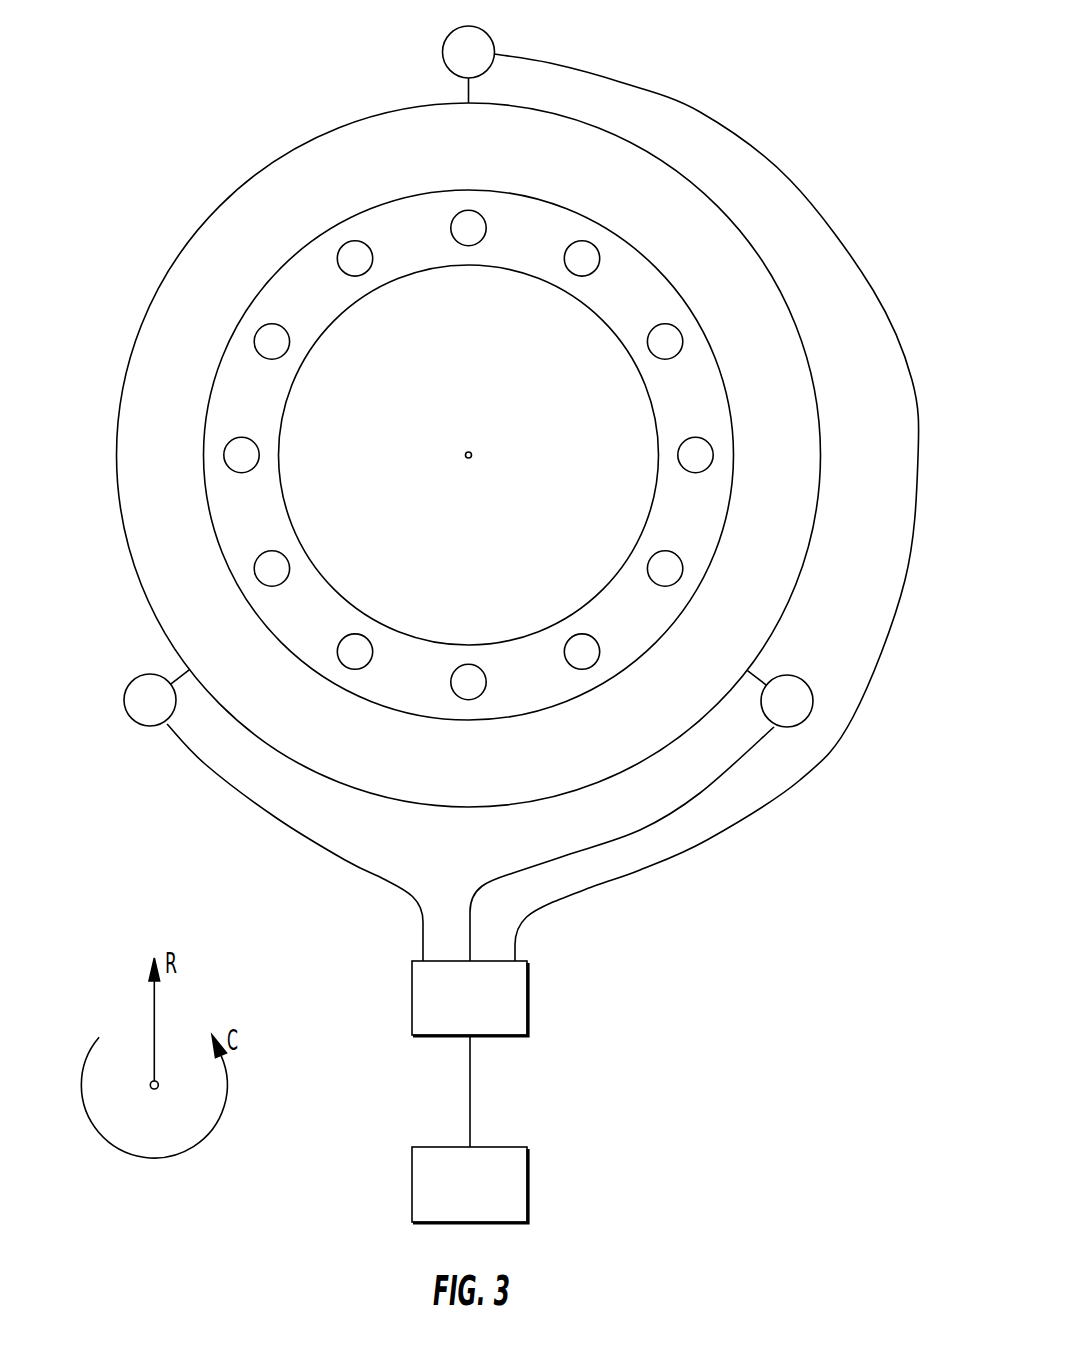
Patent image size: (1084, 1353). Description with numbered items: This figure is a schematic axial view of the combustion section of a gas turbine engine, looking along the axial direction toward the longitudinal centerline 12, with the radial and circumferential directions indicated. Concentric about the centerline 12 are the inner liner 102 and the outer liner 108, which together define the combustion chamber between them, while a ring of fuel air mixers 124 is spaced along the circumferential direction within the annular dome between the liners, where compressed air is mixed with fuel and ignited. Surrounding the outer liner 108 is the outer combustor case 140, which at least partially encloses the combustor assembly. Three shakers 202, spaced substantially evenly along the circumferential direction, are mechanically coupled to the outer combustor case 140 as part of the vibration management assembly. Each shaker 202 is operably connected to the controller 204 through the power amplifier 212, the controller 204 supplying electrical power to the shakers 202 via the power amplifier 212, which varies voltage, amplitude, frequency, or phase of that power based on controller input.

The longitudinal centerline 12 is at (471, 452).
The inner liner 102 is at (392, 282).
The outer liner 108 is at (497, 192).
The fuel air mixers 124 is at (260, 455).
The outer combustor case 140 is at (641, 149).
The shakers 202 is at (484, 29).
The controller 204 is at (487, 1194).
The power amplifier 212 is at (487, 1008).